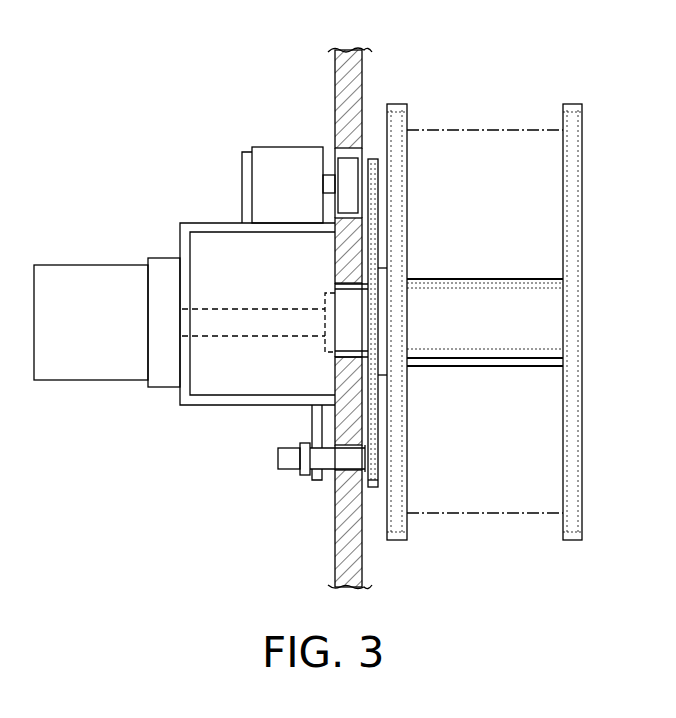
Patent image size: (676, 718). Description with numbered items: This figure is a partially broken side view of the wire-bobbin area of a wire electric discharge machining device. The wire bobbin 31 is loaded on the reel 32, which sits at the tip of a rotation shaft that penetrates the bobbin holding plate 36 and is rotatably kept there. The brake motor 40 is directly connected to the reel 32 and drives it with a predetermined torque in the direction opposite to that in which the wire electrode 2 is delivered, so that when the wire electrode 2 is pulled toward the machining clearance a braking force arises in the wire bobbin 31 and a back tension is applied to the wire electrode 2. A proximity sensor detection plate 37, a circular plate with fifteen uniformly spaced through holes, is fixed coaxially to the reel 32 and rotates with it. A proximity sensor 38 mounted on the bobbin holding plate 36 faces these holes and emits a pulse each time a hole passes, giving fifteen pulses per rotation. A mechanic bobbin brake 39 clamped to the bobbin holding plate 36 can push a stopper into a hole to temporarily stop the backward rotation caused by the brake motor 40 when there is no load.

The wire electrode 2 is at (487, 318).
The wire bobbin 31 is at (573, 104).
The reel 32 is at (358, 327).
The bobbin holding plate 36 is at (363, 83).
The proximity sensor detection plate 37 is at (371, 490).
The proximity sensor 38 is at (300, 447).
The mechanic bobbin brake 39 is at (290, 150).
The brake motor 40 is at (105, 272).